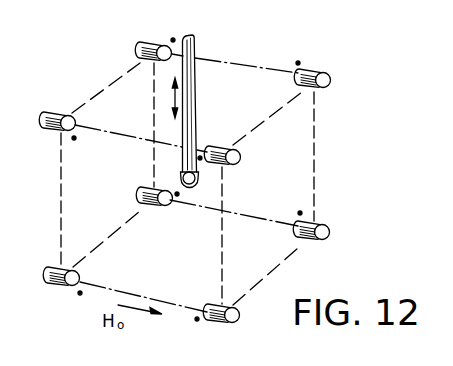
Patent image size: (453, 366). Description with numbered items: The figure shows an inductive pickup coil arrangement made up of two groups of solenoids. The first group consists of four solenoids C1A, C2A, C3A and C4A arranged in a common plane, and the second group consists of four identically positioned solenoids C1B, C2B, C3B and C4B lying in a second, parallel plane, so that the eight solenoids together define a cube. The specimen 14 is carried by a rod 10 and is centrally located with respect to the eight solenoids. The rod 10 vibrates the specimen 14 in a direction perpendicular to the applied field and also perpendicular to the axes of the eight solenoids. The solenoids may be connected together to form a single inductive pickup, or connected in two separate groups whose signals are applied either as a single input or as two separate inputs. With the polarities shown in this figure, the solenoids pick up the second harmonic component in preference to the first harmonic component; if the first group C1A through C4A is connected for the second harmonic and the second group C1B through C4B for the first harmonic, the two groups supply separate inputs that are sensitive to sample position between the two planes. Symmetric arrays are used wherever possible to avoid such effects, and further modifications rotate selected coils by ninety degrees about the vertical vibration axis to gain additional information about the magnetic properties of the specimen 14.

The rod 10 is at (196, 97).
The specimen 14 is at (183, 178).
The solenoid C1A is at (49, 112).
The solenoid C1B is at (148, 36).
The solenoid C2A is at (231, 167).
The solenoid C2B is at (315, 66).
The solenoid C3A is at (59, 292).
The solenoid C3B is at (157, 210).
The solenoid C4A is at (217, 329).
The solenoid C4B is at (321, 239).